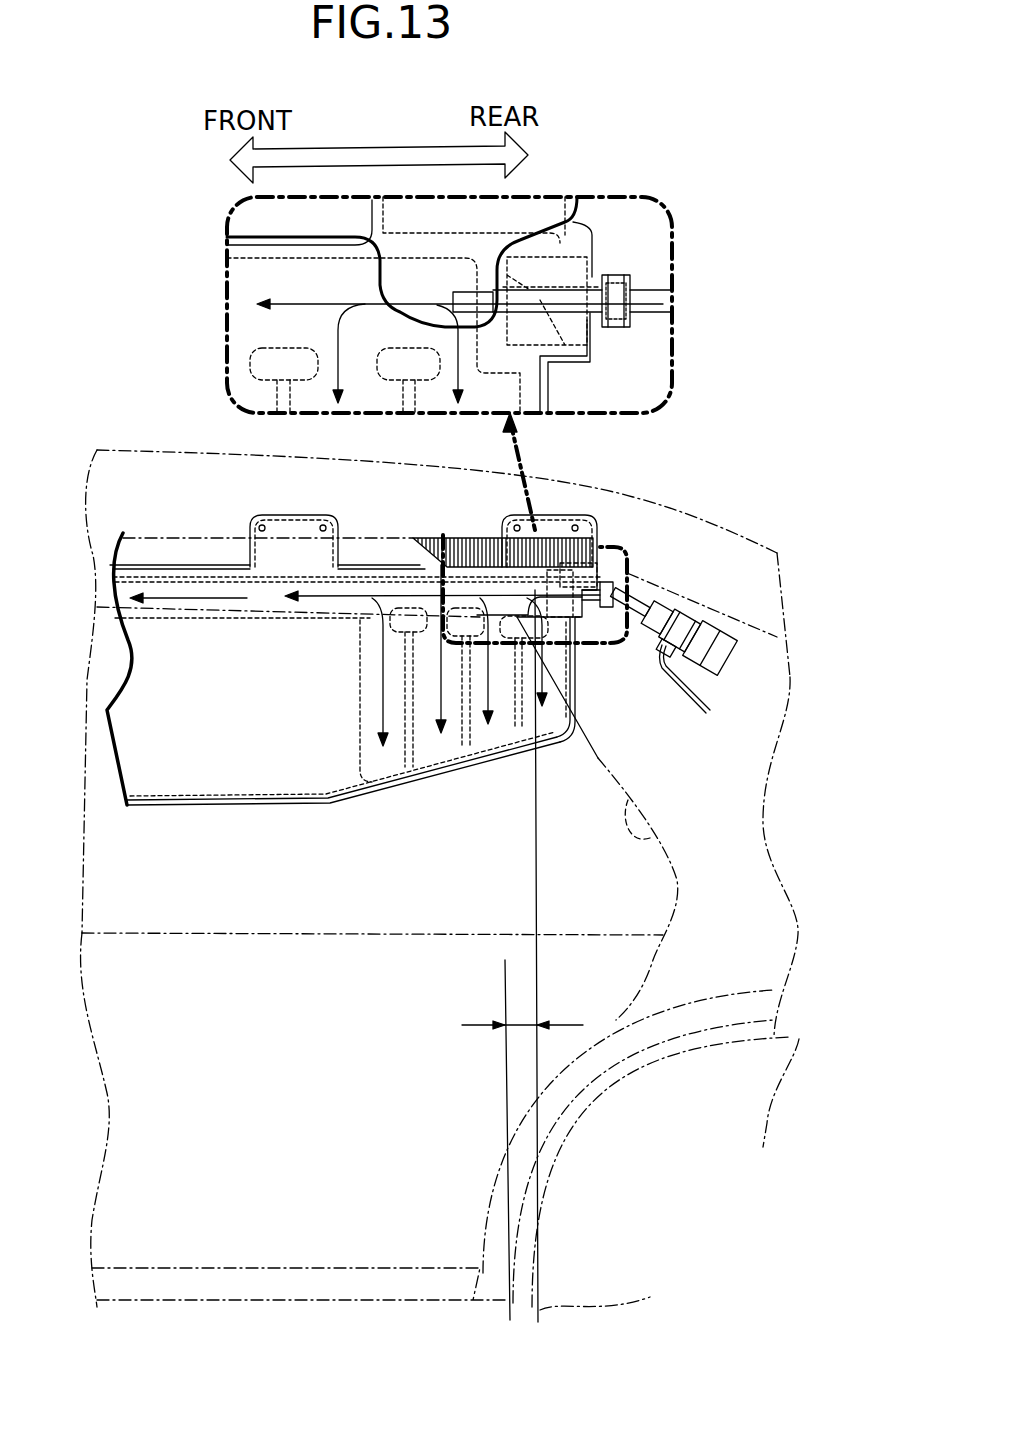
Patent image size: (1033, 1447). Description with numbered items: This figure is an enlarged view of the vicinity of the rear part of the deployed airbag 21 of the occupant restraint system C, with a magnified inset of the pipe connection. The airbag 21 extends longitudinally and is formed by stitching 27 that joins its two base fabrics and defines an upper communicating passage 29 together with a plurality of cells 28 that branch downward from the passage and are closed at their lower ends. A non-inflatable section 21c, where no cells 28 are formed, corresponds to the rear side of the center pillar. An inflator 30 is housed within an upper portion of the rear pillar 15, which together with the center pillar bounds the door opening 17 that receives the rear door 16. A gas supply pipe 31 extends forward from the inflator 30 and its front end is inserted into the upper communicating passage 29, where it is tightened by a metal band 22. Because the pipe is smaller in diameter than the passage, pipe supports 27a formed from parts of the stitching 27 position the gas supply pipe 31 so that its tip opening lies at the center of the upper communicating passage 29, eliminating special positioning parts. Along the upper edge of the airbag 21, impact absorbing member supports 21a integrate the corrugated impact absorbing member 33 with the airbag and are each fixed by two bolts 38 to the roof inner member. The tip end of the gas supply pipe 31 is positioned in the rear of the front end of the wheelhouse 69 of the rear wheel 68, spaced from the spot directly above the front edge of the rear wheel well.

The rear pillar 15 is at (630, 750).
The rear door 16 is at (664, 958).
The door opening 17 is at (650, 838).
The airbag 21 is at (207, 814).
The impact absorbing member support 21a is at (300, 526).
The non-inflatable section 21c is at (277, 782).
The metal band 22 is at (606, 278).
The stitching 27 is at (229, 612).
The pipe support 27a is at (577, 366).
The cell 28 is at (550, 723).
The upper communicating passage 29 is at (366, 580).
The inflator 30 is at (713, 638).
The gas supply pipe 31 is at (657, 292).
The impact absorbing member 33 is at (456, 538).
The bolt 38 is at (263, 522).
The rear wheel 68 is at (737, 1037).
The wheelhouse 69 is at (587, 1085).
The occupant restraint system C is at (157, 512).